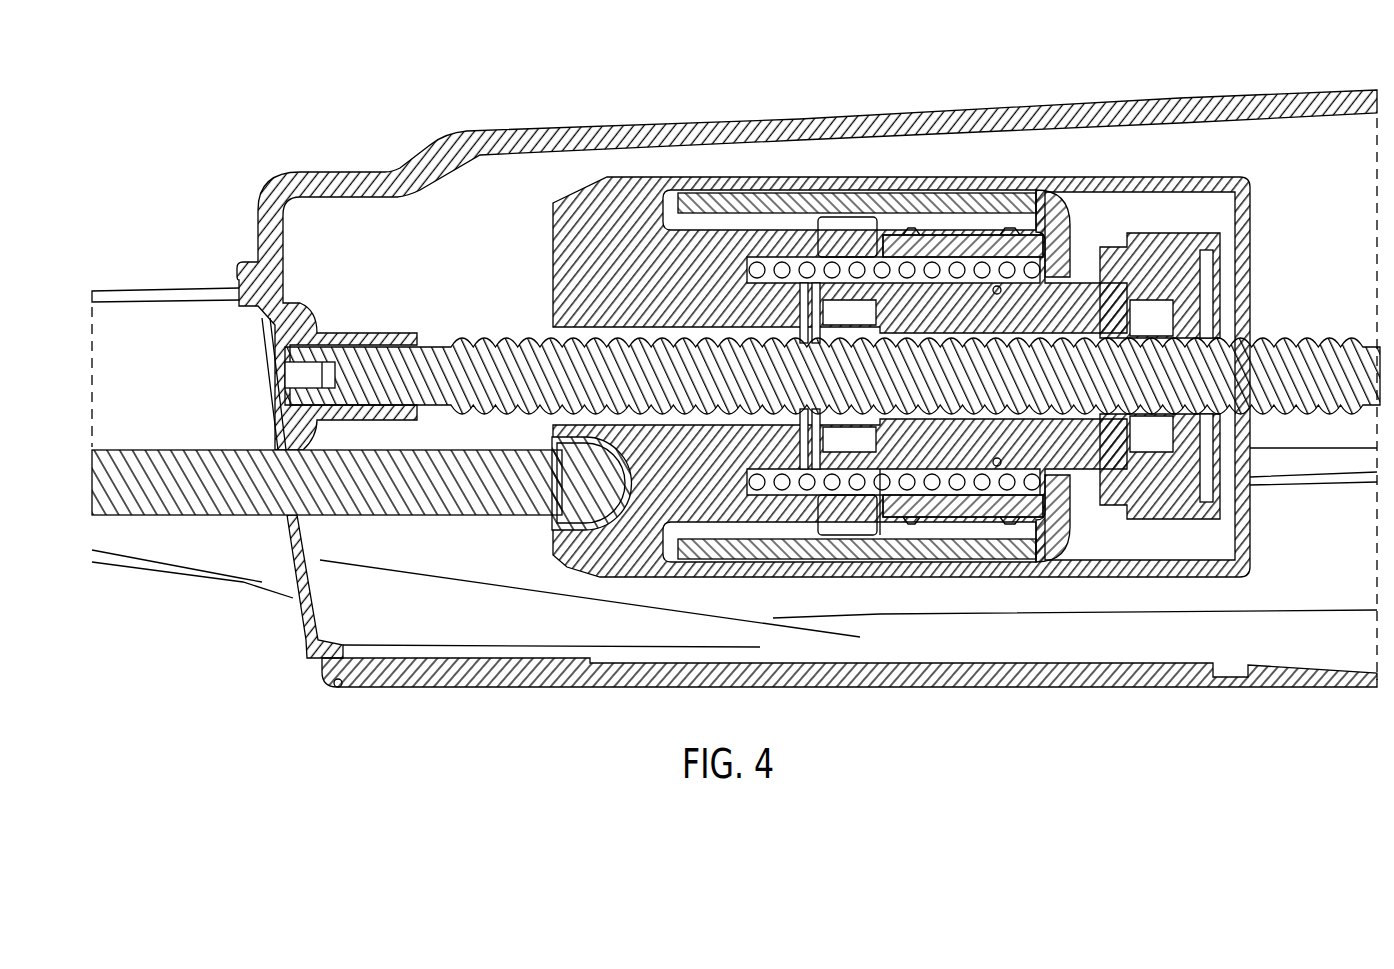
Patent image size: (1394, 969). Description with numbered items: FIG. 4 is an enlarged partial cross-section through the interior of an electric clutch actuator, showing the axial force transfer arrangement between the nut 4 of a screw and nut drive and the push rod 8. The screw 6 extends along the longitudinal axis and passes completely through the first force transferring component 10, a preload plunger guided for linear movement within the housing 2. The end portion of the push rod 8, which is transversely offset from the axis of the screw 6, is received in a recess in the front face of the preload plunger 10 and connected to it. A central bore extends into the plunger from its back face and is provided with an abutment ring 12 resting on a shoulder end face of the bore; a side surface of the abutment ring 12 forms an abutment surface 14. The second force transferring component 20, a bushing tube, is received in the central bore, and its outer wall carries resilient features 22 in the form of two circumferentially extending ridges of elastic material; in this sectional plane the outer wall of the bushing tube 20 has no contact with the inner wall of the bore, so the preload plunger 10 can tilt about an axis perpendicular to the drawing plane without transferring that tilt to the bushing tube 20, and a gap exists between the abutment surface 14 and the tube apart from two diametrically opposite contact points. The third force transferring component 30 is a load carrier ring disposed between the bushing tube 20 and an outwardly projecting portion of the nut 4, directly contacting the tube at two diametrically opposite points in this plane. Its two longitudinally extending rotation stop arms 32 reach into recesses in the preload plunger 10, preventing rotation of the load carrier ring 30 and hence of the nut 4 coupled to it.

The housing 2 is at (1292, 97).
The nut 4 is at (1133, 318).
The screw 6 is at (515, 340).
The push rod 8 is at (468, 516).
The first force transferring component 10 is at (628, 175).
The abutment ring 12 is at (852, 523).
The abutment surface 14 is at (878, 522).
The second force transferring component 20 is at (958, 233).
The resilient features 22 is at (1004, 232).
The third force transferring component 30 is at (1065, 210).
The rotation stop arms 32 is at (753, 197).